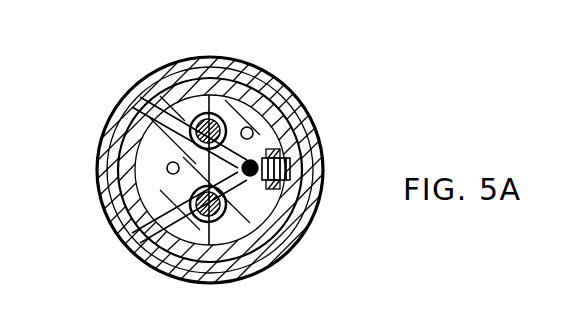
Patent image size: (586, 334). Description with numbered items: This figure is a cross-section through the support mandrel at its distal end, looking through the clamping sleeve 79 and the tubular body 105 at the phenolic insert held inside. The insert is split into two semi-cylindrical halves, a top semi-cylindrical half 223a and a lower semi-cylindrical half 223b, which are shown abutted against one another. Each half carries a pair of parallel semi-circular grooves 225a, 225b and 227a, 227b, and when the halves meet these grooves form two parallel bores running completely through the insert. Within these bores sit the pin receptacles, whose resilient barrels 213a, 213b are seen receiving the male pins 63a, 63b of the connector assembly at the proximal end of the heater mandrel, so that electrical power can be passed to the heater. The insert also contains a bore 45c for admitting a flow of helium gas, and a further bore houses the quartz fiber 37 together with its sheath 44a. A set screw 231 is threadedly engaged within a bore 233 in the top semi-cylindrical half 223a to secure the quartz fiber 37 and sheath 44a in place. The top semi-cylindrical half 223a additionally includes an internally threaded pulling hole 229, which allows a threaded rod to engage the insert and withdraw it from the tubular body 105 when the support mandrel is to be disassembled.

The tubular body 105 is at (177, 90).
The clamping sleeve 79 is at (212, 67).
The male pin 63a is at (227, 75).
The resilient barrel 213a is at (163, 88).
The semi-circular groove 225a is at (245, 80).
The pulling hole 229 is at (293, 98).
The semi-circular groove 227a is at (123, 107).
The top semi-cylindrical half 223a is at (118, 145).
The quartz fiber 37 is at (305, 128).
The bore 45c is at (140, 176).
The bore 233 is at (315, 157).
The set screw 231 is at (300, 190).
The semi-circular groove 227b is at (120, 215).
The sheath 44a is at (298, 212).
The semi-cylindrical half 223b is at (270, 235).
The resilient barrel 213b is at (145, 262).
The male pin 63b is at (240, 263).
The semi-circular groove 225b is at (202, 265).